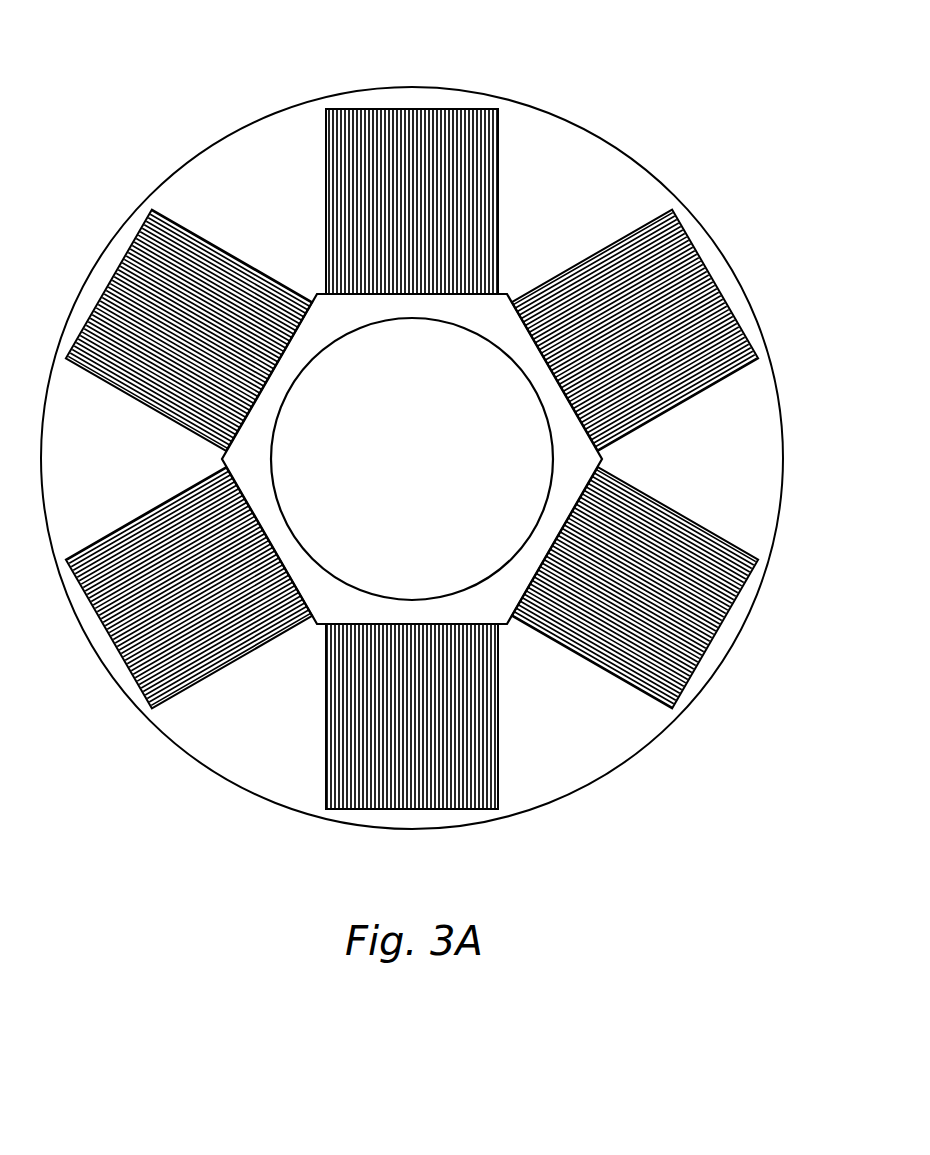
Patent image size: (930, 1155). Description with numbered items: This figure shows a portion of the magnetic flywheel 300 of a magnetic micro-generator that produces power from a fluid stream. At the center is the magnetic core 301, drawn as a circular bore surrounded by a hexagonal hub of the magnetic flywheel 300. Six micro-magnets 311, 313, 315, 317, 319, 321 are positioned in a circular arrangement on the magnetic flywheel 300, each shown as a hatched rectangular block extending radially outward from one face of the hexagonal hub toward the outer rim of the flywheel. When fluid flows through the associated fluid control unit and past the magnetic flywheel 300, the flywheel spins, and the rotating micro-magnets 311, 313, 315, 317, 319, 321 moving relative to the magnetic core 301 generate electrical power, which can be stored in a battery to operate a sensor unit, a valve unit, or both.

The magnetic flywheel 300 is at (134, 88).
The magnetic core 301 is at (473, 562).
The micro-magnet 311 is at (730, 548).
The micro-magnet 313 is at (733, 323).
The micro-magnet 315 is at (483, 109).
The micro-magnet 317 is at (105, 293).
The micro-magnet 319 is at (117, 653).
The micro-magnet 321 is at (415, 809).